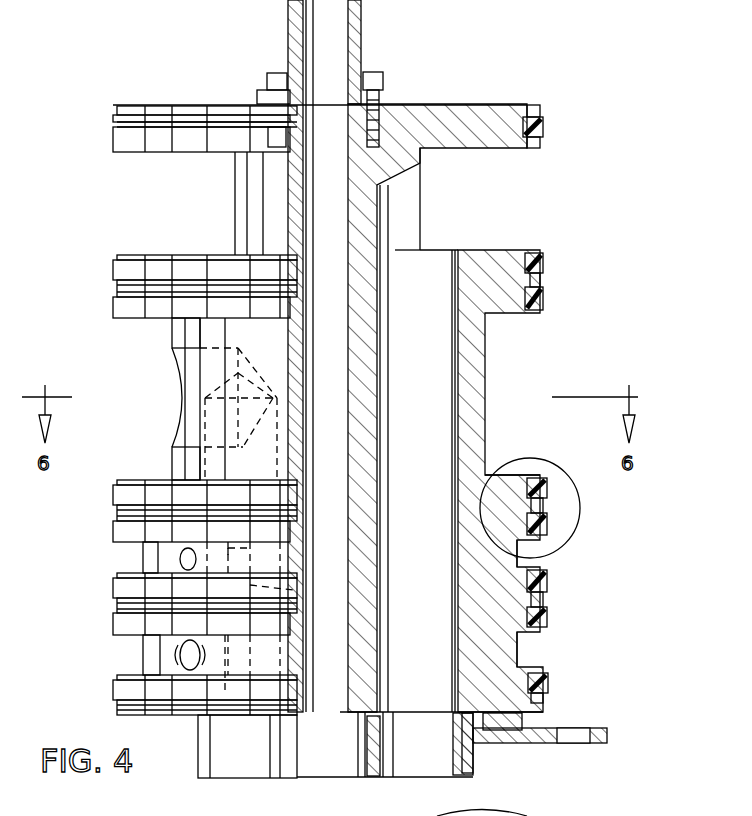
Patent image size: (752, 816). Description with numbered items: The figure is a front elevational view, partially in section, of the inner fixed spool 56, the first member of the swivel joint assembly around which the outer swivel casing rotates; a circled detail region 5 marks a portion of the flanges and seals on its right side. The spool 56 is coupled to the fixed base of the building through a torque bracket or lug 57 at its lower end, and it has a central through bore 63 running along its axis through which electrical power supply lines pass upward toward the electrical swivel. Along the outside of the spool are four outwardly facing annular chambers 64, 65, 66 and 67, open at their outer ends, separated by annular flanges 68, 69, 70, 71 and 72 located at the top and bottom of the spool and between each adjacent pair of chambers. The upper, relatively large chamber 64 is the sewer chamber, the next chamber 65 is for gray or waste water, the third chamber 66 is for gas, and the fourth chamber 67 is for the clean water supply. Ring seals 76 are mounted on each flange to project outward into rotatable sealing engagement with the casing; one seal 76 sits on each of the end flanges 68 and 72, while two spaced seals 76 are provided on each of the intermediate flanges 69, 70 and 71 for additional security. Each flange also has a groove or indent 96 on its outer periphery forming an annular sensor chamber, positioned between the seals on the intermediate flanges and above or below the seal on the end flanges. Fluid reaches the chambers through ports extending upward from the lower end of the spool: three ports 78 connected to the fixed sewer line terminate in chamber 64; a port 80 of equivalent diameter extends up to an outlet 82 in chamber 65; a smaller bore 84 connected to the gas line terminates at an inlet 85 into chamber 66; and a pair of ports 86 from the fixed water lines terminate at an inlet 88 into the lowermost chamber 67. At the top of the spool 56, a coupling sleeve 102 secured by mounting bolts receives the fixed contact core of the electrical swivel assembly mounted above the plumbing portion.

The detail circle 5 is at (580, 513).
The inner fixed spool 56 is at (475, 356).
The torque bracket or lug 57 is at (533, 741).
The central through bore 63 is at (320, 240).
The annular chamber 64 is at (150, 192).
The annular chamber 65 is at (130, 333).
The annular chamber 66 is at (112, 550).
The annular chamber 67 is at (114, 652).
The annular flange 68 is at (457, 103).
The annular flange 69 is at (487, 250).
The annular flange 70 is at (517, 475).
The annular flange 71 is at (527, 561).
The annular flange 72 is at (533, 667).
The ring seal 76 is at (543, 128).
The port or bore 78 is at (425, 280).
The port or bore 80 is at (165, 451).
The outlet 82 is at (183, 375).
The port or bore 84 is at (293, 590).
The inlet 85 is at (180, 559).
The port or bore 86 is at (226, 687).
The inlet 88 is at (137, 663).
The groove or indent 96 is at (117, 116).
The coupling sleeve 102 is at (362, 26).